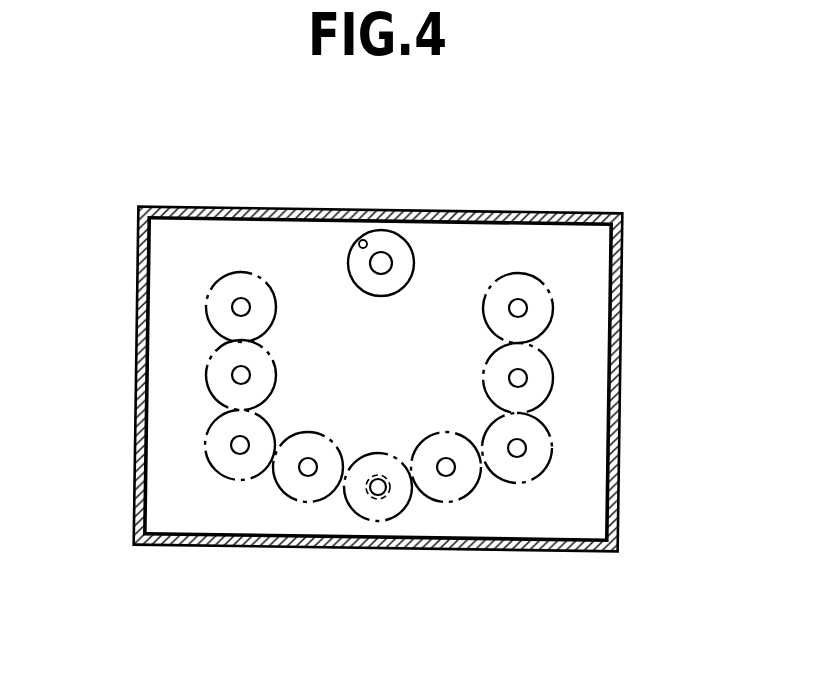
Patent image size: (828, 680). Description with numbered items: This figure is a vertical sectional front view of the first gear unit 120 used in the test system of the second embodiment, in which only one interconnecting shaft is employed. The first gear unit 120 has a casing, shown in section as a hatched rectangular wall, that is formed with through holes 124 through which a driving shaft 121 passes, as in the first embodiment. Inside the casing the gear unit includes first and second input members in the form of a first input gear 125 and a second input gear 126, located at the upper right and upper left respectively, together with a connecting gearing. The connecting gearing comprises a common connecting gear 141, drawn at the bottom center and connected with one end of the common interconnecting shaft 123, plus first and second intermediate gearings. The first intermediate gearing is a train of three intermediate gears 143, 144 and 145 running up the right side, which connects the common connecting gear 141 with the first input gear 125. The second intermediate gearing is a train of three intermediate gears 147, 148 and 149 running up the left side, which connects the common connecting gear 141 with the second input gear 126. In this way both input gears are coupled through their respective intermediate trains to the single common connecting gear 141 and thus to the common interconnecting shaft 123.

The first gear unit 120 is at (623, 287).
The driving shaft 121 is at (390, 252).
The common interconnecting shaft 123 is at (366, 493).
The through hole 124 is at (365, 242).
The first input gear 125 is at (553, 315).
The second input gear 126 is at (207, 302).
The common connecting gear 141 is at (372, 523).
The intermediate gear 143 is at (468, 493).
The intermediate gear 144 is at (530, 480).
The intermediate gear 145 is at (552, 393).
The intermediate gear 147 is at (282, 487).
The intermediate gear 148 is at (210, 467).
The intermediate gear 149 is at (205, 370).